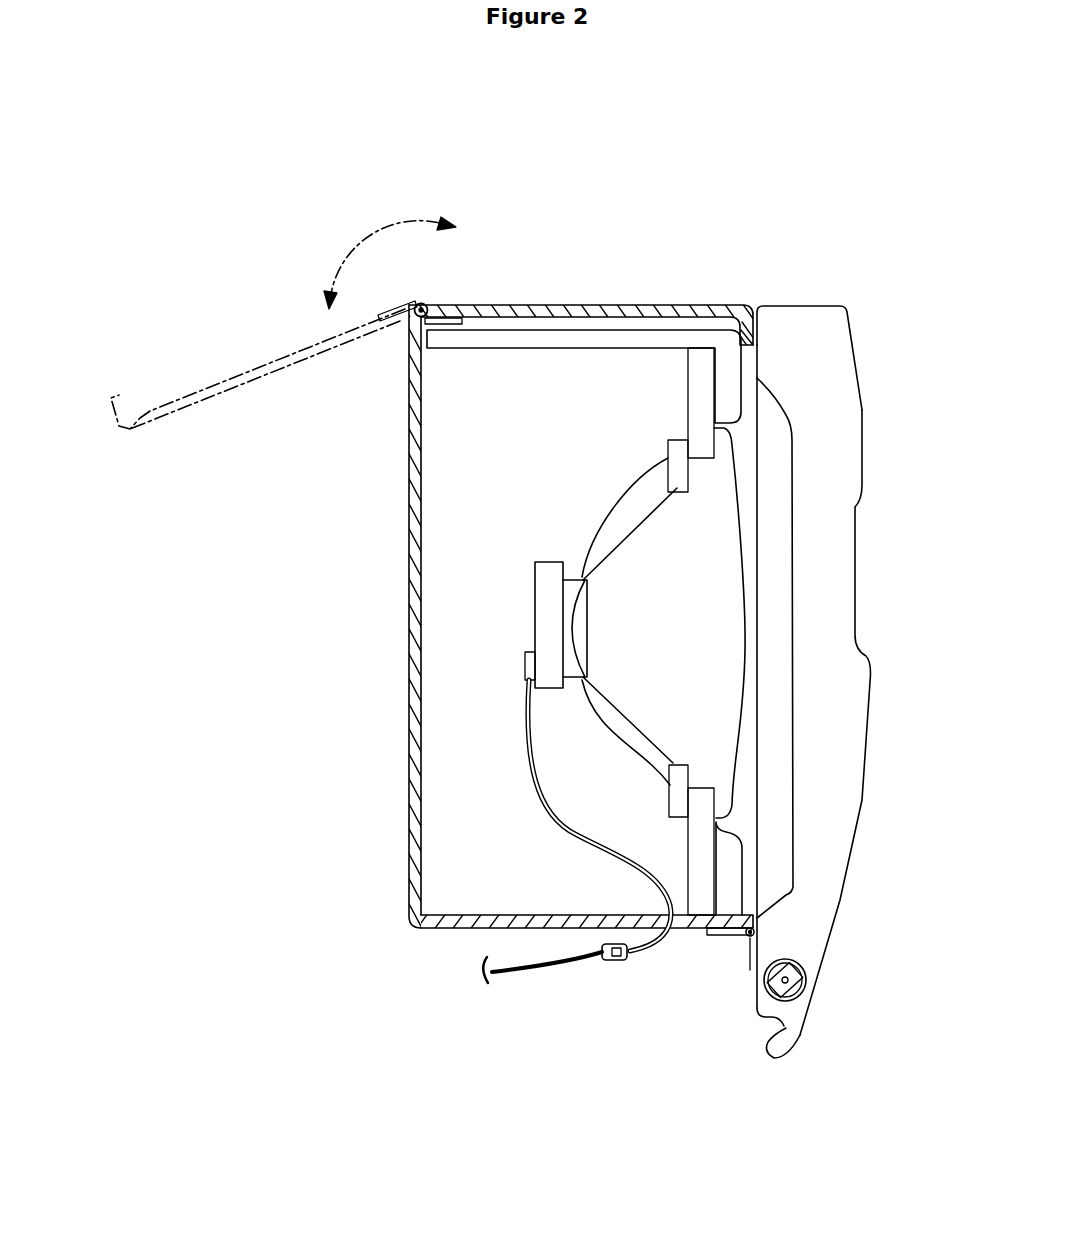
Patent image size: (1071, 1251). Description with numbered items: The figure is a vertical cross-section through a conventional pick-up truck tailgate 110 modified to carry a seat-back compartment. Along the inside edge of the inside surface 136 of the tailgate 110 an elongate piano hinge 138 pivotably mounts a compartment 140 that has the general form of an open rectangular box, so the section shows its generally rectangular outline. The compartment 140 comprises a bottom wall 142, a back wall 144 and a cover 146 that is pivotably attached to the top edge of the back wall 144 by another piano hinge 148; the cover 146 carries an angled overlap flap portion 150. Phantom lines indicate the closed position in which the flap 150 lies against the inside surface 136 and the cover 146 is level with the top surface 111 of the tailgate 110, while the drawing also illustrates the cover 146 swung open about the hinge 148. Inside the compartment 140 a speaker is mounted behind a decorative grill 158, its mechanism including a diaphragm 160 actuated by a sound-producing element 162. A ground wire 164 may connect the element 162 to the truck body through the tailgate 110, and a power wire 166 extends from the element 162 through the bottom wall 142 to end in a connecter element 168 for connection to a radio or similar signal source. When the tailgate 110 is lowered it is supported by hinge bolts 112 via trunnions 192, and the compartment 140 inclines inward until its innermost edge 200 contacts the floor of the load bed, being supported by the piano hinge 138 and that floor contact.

The tailgate 110 is at (852, 783).
The top surface of tailgate 111 is at (795, 307).
The hinge bolt 112 is at (788, 979).
The inside surface of tailgate 136 is at (755, 428).
The piano hinge 138 is at (750, 937).
The compartment 140 is at (475, 525).
The bottom wall 142 is at (460, 928).
The back wall 144 is at (408, 745).
The cover 146 is at (622, 304).
The piano hinge 148 is at (425, 306).
The overlap flap portion 150 is at (745, 332).
The decorative grill 158 is at (737, 482).
The diaphragm 160 is at (633, 527).
The sound-producing element 162 is at (530, 625).
The ground wire 164 is at (550, 972).
The power wire 166 is at (653, 945).
The connecter element 168 is at (613, 962).
The trunnion 192 is at (795, 997).
The innermost edge 200 is at (418, 923).